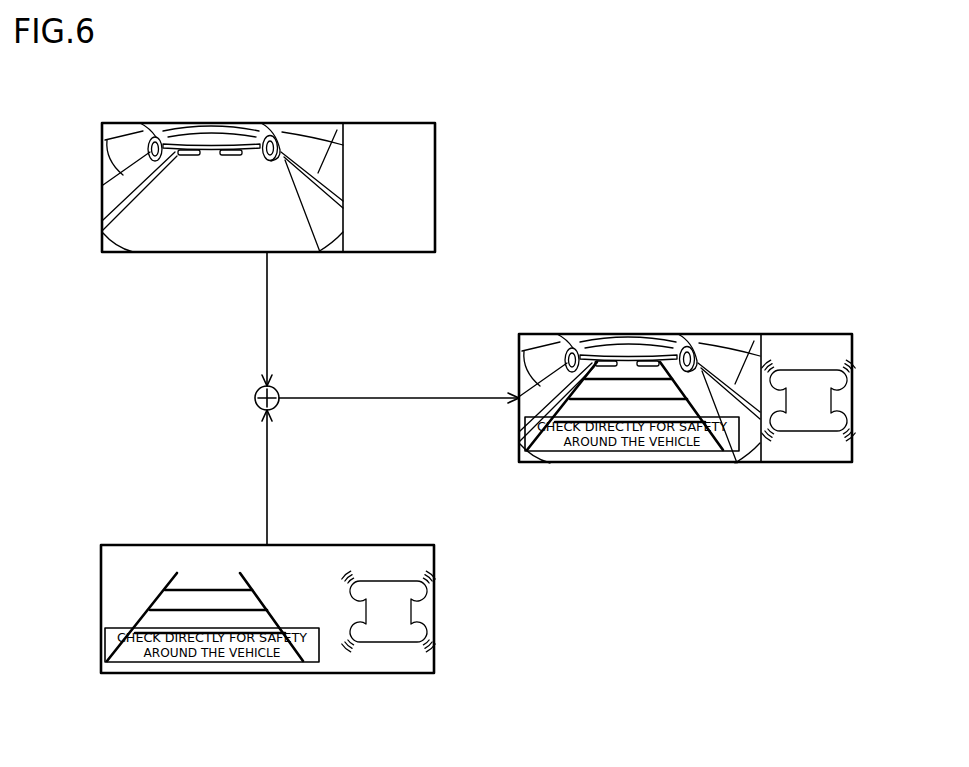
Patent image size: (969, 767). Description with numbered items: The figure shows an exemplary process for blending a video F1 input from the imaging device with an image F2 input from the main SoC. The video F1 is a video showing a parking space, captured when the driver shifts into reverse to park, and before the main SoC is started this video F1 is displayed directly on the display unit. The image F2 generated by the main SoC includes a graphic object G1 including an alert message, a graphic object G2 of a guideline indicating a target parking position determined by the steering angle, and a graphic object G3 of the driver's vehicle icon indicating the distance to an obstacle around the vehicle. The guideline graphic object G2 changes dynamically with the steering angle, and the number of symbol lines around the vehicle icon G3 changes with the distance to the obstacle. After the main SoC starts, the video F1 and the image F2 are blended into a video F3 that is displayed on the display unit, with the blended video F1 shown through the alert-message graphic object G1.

The video input from the imaging device F1 is at (320, 123).
The image input from the main SoC F2 is at (320, 545).
The blended video F3 is at (738, 334).
The graphic object including an alert message G1 is at (215, 662).
The graphic object of a guideline G2 is at (135, 625).
The graphic object of the driver's vehicle icon G3 is at (428, 592).